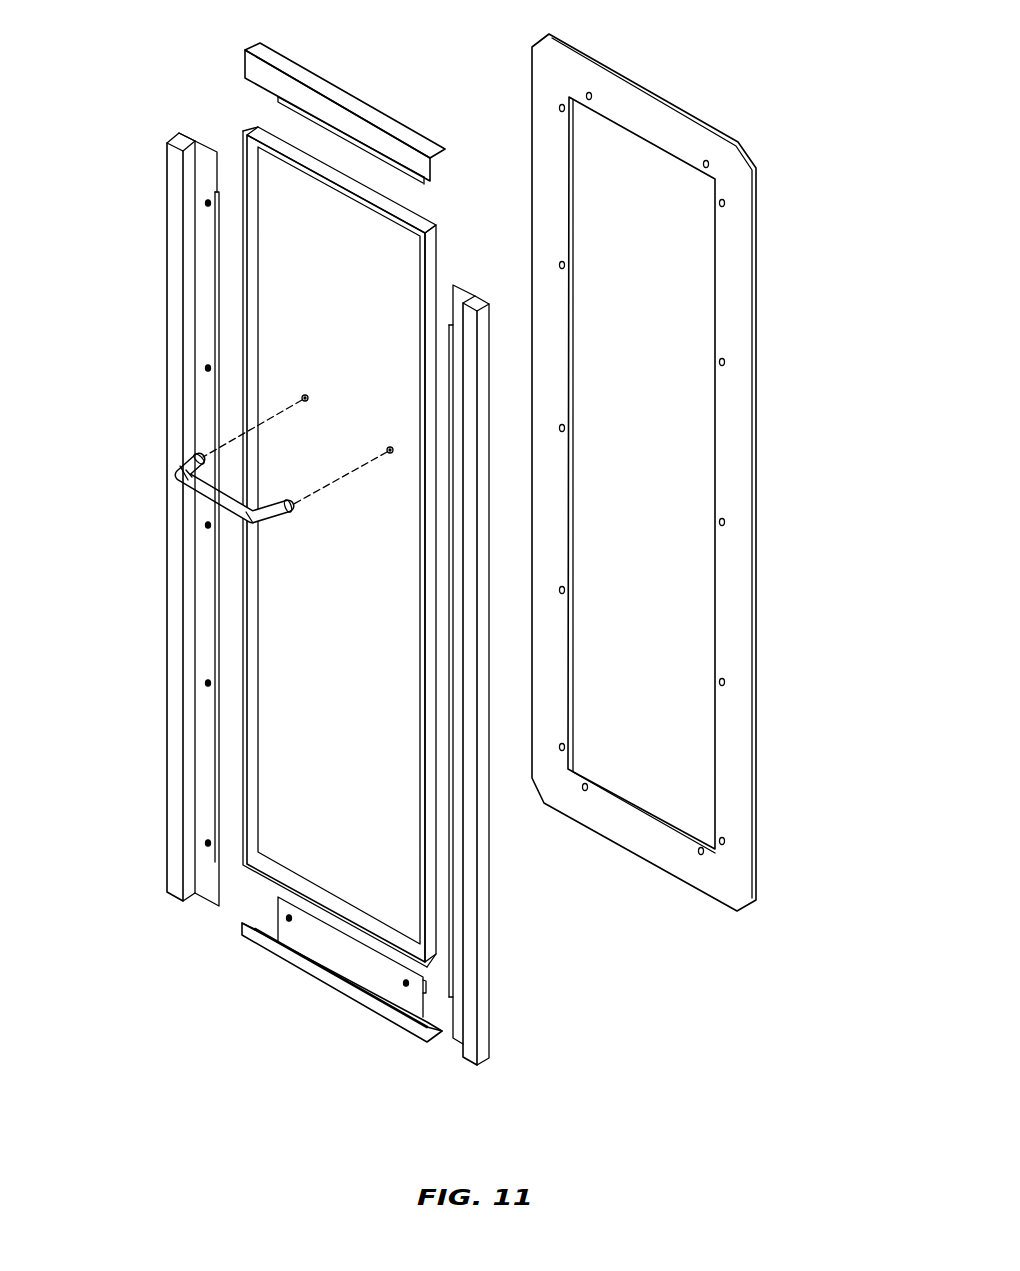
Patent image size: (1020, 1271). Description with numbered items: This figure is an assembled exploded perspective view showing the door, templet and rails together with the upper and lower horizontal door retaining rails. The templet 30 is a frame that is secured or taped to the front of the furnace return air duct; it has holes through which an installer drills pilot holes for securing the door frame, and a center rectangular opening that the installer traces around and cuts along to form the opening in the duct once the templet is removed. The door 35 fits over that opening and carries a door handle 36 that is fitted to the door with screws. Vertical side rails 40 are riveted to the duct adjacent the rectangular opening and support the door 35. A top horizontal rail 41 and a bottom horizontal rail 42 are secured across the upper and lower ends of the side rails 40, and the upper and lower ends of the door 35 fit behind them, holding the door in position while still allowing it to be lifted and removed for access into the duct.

The templet 30 is at (658, 862).
The door 35 is at (351, 645).
The door handle 36 is at (187, 493).
The rails 40 is at (167, 803).
The top door frame 41 is at (345, 101).
The bottom door frame 42 is at (345, 967).